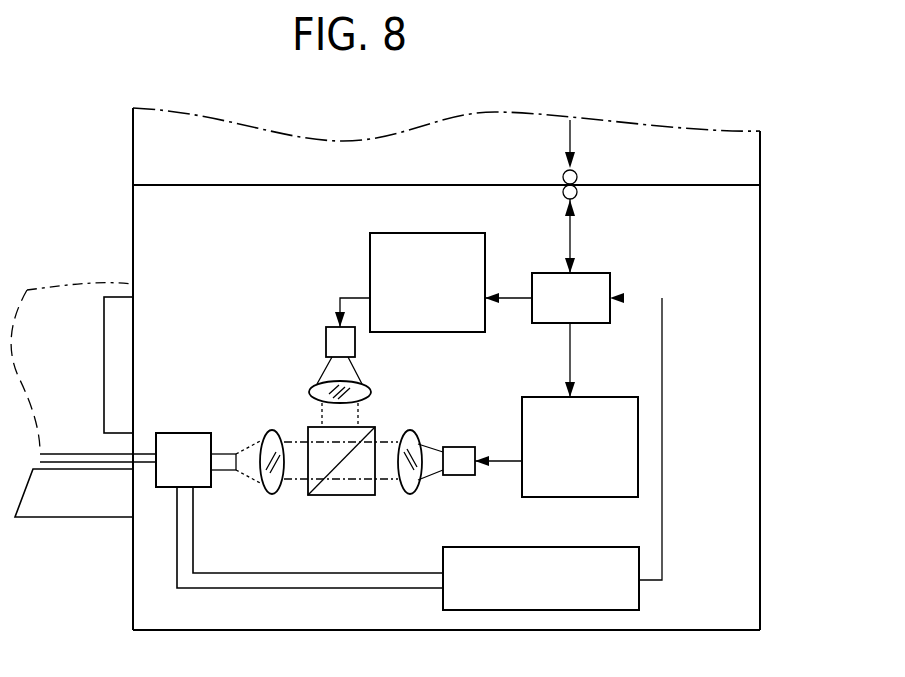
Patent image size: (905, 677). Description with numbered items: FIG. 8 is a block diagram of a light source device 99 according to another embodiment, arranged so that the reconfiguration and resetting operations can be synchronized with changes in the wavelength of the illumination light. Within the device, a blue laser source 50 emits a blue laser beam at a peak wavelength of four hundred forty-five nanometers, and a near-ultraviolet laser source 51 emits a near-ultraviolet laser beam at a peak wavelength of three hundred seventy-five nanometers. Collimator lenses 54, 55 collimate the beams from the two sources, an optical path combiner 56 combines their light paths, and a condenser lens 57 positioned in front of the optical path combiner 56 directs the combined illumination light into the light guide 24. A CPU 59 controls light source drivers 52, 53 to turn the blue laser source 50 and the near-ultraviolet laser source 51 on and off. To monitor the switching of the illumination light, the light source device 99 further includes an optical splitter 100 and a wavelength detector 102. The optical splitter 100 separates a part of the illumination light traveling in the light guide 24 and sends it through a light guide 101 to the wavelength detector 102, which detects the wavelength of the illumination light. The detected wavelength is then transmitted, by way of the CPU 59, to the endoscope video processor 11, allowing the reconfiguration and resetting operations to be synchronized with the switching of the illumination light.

The endoscope video processor 11 is at (124, 150).
The light guide 24 is at (62, 452).
The blue laser source 50 is at (325, 341).
The near-ultraviolet laser source 51 is at (455, 447).
The light source driver 52 is at (420, 232).
The light source driver 53 is at (560, 397).
The collimator lens 54 is at (362, 385).
The collimator lens 55 is at (415, 490).
The optical path combiner 56 is at (350, 500).
The condenser lens 57 is at (262, 441).
The CPU 59 is at (562, 273).
The light source device 99 is at (124, 580).
The optical splitter 100 is at (176, 433).
The light guide 101 is at (355, 572).
The wavelength detector 102 is at (525, 547).